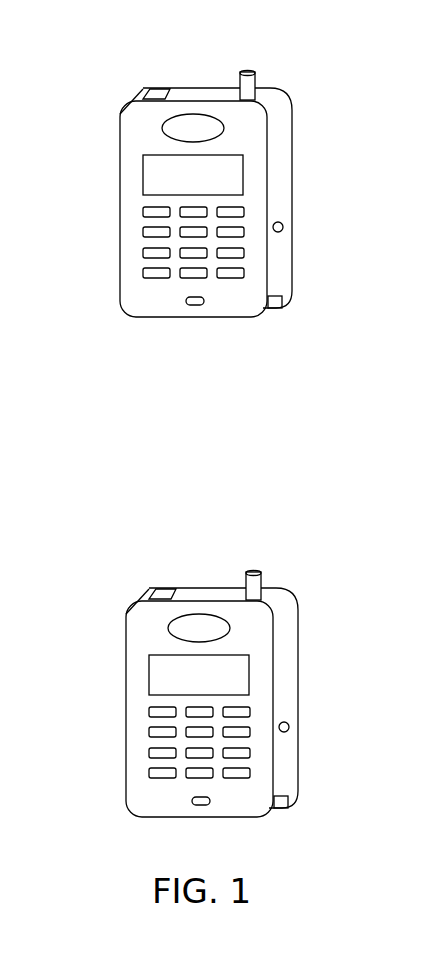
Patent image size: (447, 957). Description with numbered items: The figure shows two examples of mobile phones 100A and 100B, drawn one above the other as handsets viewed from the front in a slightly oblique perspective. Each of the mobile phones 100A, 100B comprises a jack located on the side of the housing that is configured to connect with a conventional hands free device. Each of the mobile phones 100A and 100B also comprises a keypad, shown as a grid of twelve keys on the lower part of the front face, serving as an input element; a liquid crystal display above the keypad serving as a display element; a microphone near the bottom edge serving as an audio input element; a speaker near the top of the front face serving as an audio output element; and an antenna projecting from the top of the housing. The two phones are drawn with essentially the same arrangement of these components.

The mobile phone 100A is at (157, 72).
The mobile phone 100B is at (202, 669).